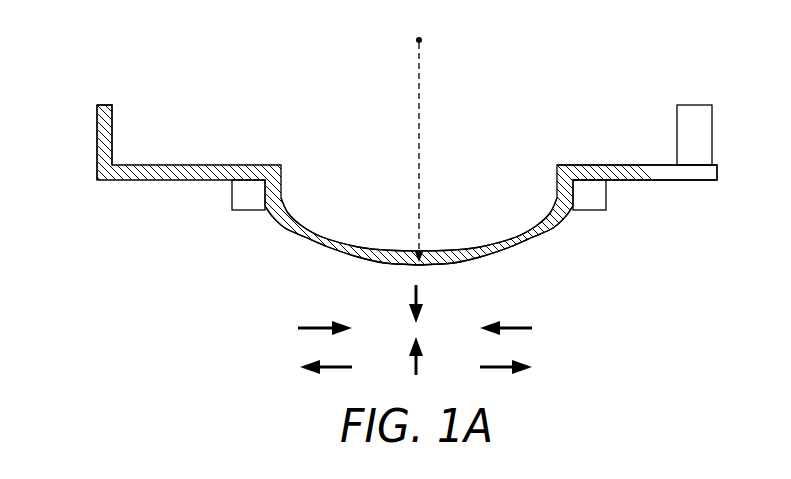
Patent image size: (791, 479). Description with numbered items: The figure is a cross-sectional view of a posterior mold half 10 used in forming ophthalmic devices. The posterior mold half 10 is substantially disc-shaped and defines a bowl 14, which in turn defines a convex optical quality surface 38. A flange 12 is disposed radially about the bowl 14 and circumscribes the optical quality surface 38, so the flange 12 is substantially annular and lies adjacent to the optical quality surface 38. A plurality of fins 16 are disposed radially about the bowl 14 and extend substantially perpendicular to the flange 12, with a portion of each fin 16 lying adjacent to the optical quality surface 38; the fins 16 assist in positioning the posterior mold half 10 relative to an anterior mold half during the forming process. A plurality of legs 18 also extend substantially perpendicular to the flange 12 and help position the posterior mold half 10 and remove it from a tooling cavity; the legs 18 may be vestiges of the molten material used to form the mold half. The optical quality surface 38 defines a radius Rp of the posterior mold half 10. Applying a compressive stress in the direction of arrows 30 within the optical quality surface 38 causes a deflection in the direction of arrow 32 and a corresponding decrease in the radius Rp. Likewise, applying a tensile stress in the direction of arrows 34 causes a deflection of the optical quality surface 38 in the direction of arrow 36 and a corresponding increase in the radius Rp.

The posterior mold half 10 is at (534, 78).
The flange 12 is at (620, 165).
The bowl 14 is at (470, 226).
The fin 16 is at (243, 193).
The leg 18 is at (106, 105).
The radius of the optical quality surface Rp is at (421, 128).
The compressive stress direction arrows 30 is at (320, 327).
The deflection direction arrow 32 is at (413, 293).
The tensile stress direction arrows 34 is at (340, 363).
The deflection direction arrow 36 is at (414, 368).
The optical quality surface 38 is at (548, 232).